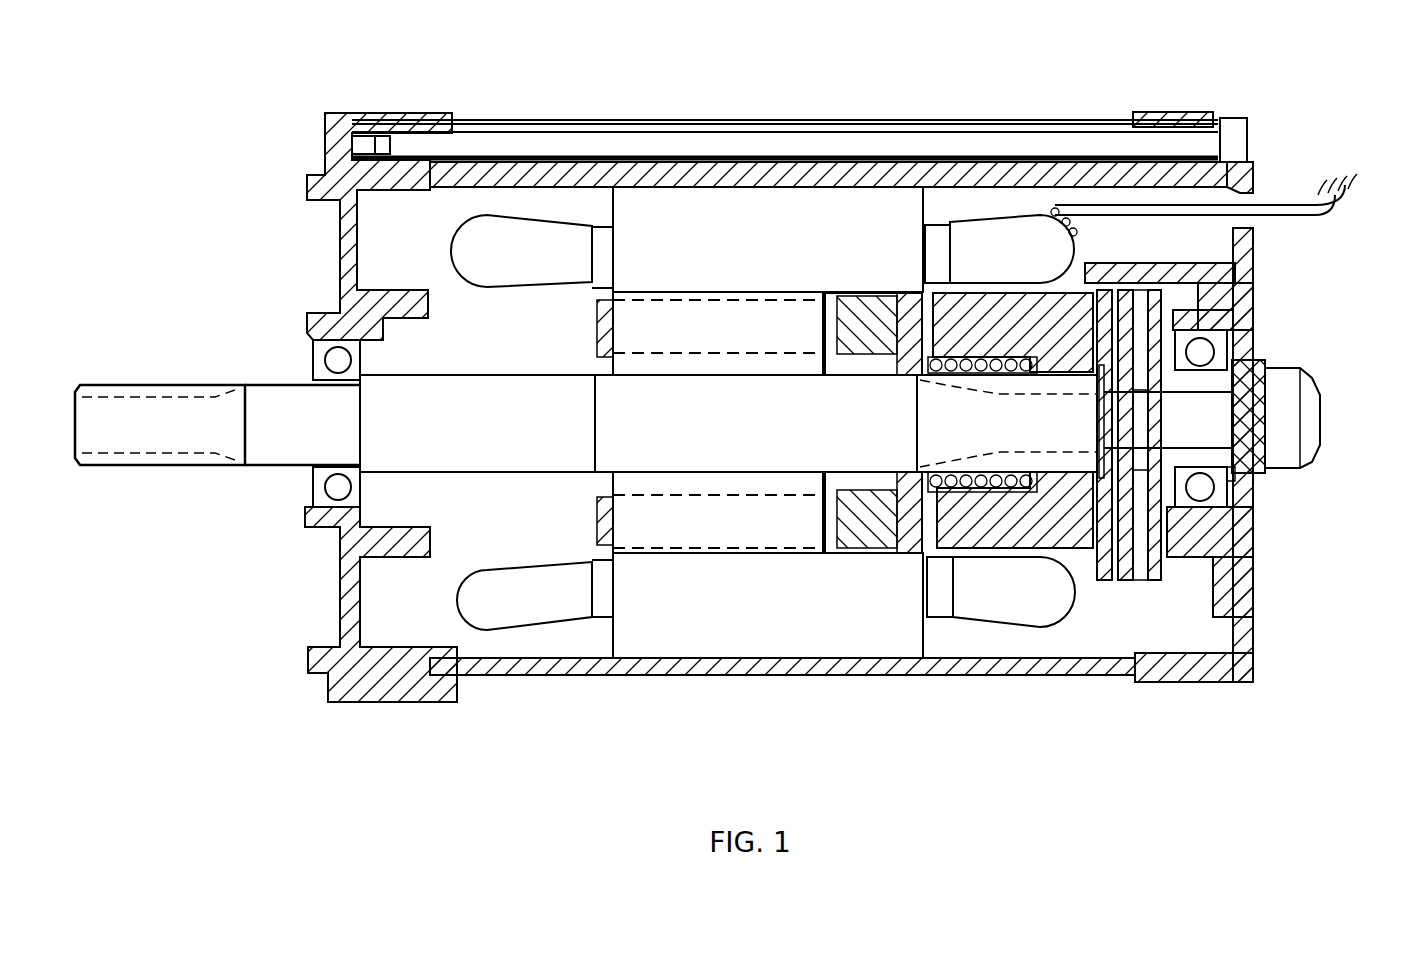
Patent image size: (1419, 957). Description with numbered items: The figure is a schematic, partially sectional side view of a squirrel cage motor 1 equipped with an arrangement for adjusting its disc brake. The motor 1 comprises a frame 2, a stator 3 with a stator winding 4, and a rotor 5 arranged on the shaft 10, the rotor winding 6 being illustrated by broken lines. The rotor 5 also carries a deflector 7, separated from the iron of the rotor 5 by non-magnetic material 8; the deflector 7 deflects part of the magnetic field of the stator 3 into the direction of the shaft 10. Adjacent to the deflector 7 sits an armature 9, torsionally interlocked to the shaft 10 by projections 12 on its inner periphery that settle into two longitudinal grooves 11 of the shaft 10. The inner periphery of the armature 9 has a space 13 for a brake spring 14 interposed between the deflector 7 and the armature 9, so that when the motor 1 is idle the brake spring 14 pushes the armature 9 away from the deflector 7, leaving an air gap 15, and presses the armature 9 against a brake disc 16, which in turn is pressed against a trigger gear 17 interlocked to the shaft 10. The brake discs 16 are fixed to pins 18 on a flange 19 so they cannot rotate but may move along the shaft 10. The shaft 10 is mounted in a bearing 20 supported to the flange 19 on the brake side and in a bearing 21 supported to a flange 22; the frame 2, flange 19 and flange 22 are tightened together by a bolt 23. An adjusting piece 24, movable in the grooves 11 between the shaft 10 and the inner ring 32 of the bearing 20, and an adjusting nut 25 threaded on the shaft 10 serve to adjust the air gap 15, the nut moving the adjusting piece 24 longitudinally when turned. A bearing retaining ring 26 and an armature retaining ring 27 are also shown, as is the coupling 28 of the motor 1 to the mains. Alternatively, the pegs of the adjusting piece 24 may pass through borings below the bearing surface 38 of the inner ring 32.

The squirrel cage motor 1 is at (648, 104).
The frame 2 is at (707, 175).
The stator 3 is at (666, 256).
The stator winding 4 is at (482, 250).
The rotor 5 is at (578, 520).
The rotor winding 6 is at (713, 520).
The deflector 7 is at (883, 557).
The non-magnetic material 8 is at (833, 510).
The armature 9 is at (975, 318).
The shaft 10 is at (222, 410).
The longitudinal grooves 11 is at (992, 382).
The projections 12 is at (1060, 380).
The space 13 is at (920, 467).
The brake spring 14 is at (920, 382).
The air gap 15 is at (930, 300).
The brake disc 16 is at (1104, 570).
The trigger gear 17 is at (1124, 568).
The pin 18 is at (1156, 570).
The flange 19 is at (1247, 597).
The bearing 20 is at (1215, 498).
The bearing 21 is at (338, 487).
The flange 22 is at (345, 332).
The bolt 23 is at (1238, 135).
The adjusting piece 24 is at (1258, 365).
The adjusting nut 25 is at (1283, 425).
The bearing retaining ring 26 is at (1166, 448).
The armature retaining ring 27 is at (1100, 437).
The coupling 28 is at (1343, 160).
The inner ring 32 is at (1235, 475).
The bearing surface 38 is at (1253, 277).